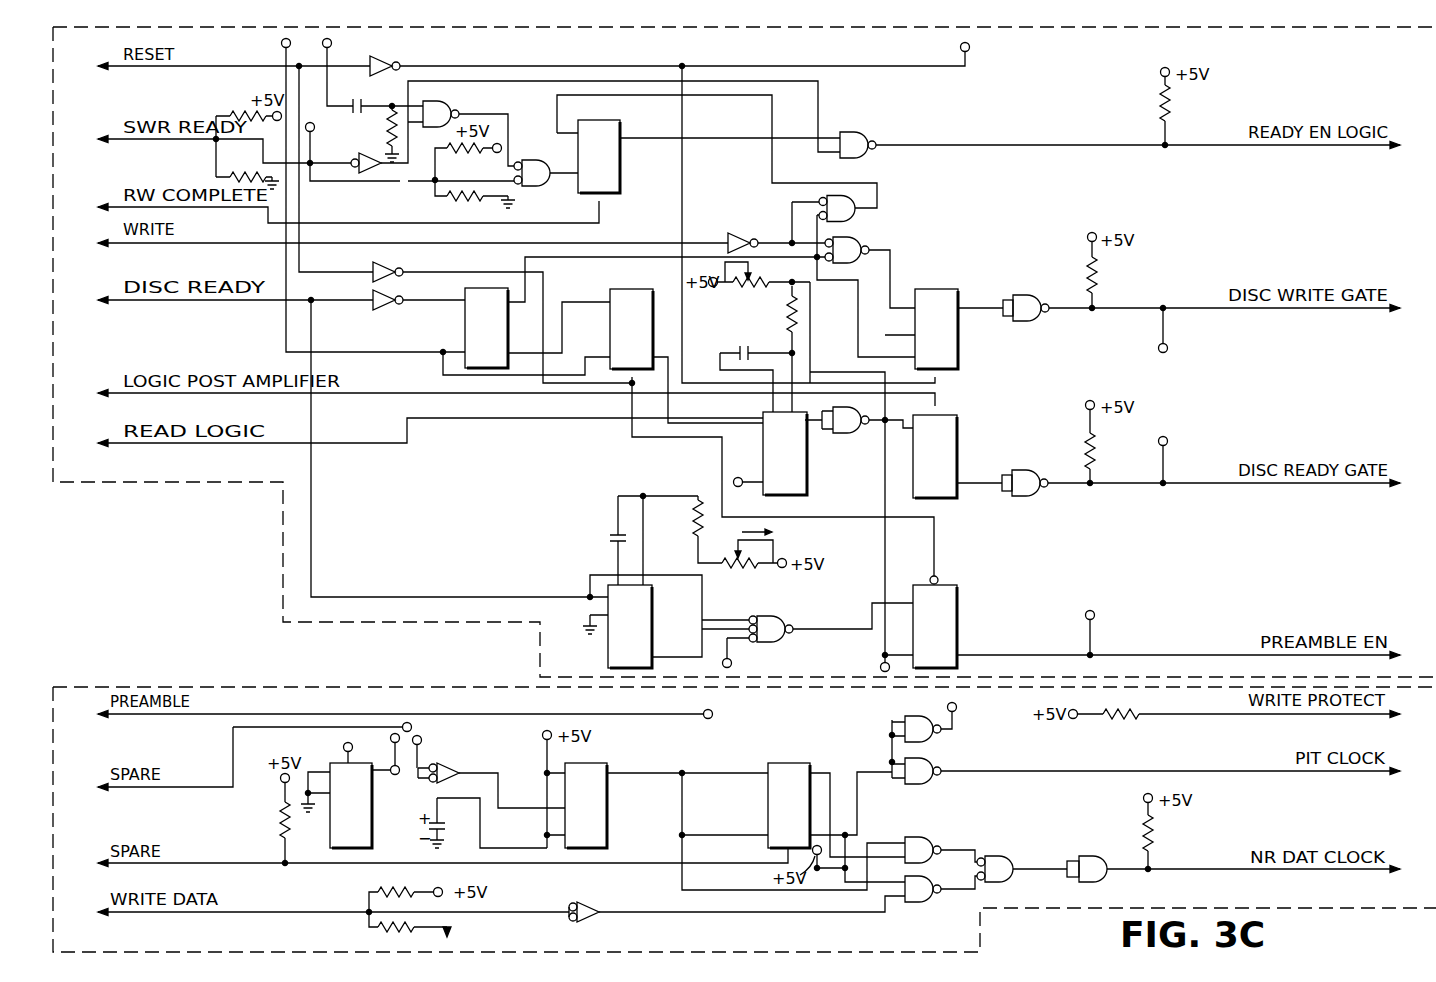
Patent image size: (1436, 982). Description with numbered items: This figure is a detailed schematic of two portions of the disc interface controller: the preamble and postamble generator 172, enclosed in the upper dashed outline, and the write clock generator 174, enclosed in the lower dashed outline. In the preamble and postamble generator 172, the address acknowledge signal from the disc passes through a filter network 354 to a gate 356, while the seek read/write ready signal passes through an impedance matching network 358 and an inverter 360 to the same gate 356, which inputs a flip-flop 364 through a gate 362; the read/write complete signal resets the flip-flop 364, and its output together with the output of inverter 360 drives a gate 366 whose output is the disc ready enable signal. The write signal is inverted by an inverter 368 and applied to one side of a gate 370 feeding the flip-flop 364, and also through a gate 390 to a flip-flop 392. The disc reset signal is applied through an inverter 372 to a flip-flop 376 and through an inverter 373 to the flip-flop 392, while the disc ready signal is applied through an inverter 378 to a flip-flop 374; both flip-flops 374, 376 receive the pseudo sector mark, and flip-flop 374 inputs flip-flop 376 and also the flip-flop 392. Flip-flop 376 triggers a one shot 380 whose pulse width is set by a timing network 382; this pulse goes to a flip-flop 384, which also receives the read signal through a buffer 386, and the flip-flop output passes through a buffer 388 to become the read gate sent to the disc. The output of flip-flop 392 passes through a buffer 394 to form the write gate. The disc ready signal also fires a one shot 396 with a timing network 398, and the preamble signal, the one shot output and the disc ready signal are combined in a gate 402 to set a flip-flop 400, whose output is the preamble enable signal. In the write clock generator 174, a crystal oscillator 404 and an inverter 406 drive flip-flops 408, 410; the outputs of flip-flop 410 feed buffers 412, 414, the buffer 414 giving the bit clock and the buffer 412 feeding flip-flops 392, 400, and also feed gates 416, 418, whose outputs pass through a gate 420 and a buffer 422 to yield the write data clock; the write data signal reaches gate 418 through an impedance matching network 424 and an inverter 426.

The preamble and postamble generator 172 is at (240, 484).
The write clock generator 174 is at (177, 686).
The filter network 354 is at (366, 100).
The gate 356 is at (452, 108).
The impedance matching network 358 is at (213, 115).
The inverter 360 is at (364, 153).
The gate 362 is at (545, 160).
The flip-flop 364 is at (622, 172).
The gate 366 is at (862, 134).
The inverter 368 is at (739, 233).
The gate 370 is at (860, 216).
The inverter 372 is at (386, 264).
The inverter 373 is at (388, 58).
The flip-flop 374 is at (465, 330).
The flip-flop 376 is at (620, 289).
The inverter 378 is at (377, 312).
The one shot multivibrator 380 is at (806, 470).
The timing network 382 is at (712, 328).
The flip-flop 384 is at (960, 418).
The buffer 386 is at (842, 433).
The buffer 388 is at (1024, 498).
The gate 390 is at (869, 253).
The flip-flop 392 is at (945, 290).
The buffer 394 is at (1028, 296).
The one shot multivibrator 396 is at (608, 650).
The timing network 398 is at (610, 541).
The flip-flop 400 is at (958, 592).
The gate 402 is at (780, 616).
The crystal oscillator 404 is at (372, 802).
The inverter 406 is at (450, 765).
The flip-flop 408 is at (604, 763).
The flip-flop 410 is at (800, 763).
The buffer 412 is at (912, 716).
The buffer 414 is at (935, 758).
The gate 416 is at (928, 837).
The gate 418 is at (920, 903).
The gate 420 is at (1004, 857).
The buffer 422 is at (1100, 882).
The impedance matching network 424 is at (366, 912).
The inverter 426 is at (590, 901).